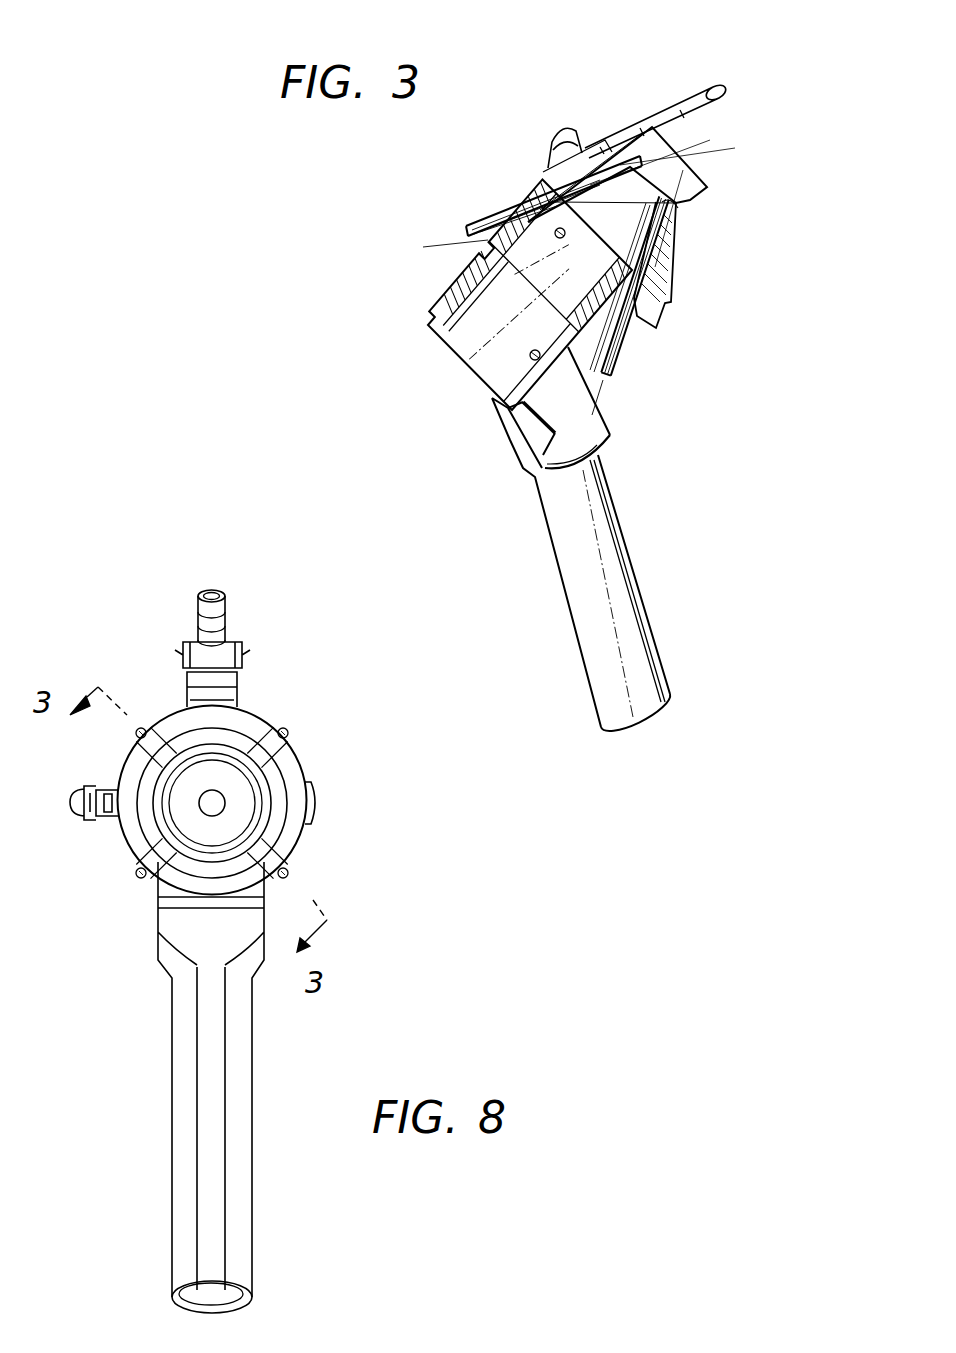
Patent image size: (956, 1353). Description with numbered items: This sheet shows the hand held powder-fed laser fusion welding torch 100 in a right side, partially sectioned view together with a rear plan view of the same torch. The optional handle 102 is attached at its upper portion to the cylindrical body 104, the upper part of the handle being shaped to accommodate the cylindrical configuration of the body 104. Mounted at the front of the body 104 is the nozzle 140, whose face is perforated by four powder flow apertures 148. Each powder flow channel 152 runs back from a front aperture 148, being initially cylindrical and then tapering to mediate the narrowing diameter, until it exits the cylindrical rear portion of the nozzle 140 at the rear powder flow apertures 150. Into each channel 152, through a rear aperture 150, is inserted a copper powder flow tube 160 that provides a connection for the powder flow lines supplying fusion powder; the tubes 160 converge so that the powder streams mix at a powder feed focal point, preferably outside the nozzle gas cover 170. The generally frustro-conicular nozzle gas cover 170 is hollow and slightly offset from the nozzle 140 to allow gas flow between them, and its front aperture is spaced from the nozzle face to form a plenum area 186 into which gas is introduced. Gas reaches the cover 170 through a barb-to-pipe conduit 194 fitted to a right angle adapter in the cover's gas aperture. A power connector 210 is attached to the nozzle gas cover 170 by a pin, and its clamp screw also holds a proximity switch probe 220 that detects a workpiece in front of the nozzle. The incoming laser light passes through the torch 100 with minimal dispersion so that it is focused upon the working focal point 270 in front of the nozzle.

In FIG. 8, the hand held powder-fed laser fusion welding torch 100 is at (340, 739).
In FIG. 3, the handle 102 is at (637, 590).
In FIG. 8, the handle 102 is at (253, 1135).
In FIG. 3, the body 104 is at (440, 302).
In FIG. 8, the body 104 is at (272, 836).
In FIG. 3, the nozzle 140 is at (470, 246).
In FIG. 3, the powder flow apertures 148 is at (672, 200).
In FIG. 3, the rear powder flow apertures 150 is at (613, 376).
In FIG. 3, the powder flow channel 152 is at (657, 247).
In FIG. 3, the powder flow tube 160 is at (478, 230).
In FIG. 8, the powder flow tube 160 is at (286, 734).
In FIG. 8, the nozzle gas cover 170 is at (298, 768).
In FIG. 3, the plenum area 186 is at (648, 190).
In FIG. 8, the barb-to-pipe conduit 194 is at (226, 608).
In FIG. 8, the power connector 210 is at (92, 818).
In FIG. 3, the proximity switch probe 220 is at (680, 75).
In FIG. 3, the working focal point 270 is at (690, 153).